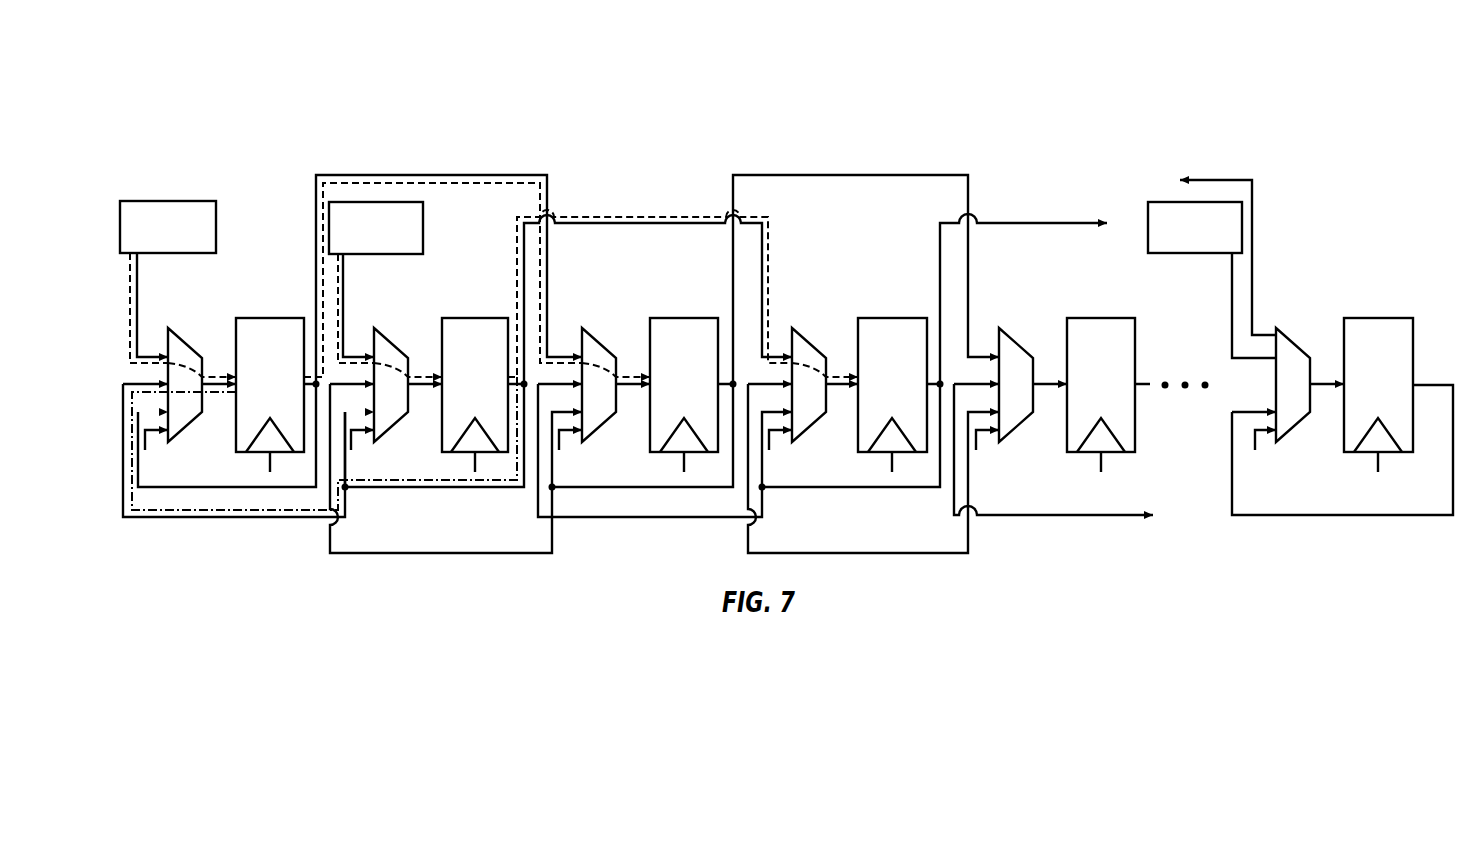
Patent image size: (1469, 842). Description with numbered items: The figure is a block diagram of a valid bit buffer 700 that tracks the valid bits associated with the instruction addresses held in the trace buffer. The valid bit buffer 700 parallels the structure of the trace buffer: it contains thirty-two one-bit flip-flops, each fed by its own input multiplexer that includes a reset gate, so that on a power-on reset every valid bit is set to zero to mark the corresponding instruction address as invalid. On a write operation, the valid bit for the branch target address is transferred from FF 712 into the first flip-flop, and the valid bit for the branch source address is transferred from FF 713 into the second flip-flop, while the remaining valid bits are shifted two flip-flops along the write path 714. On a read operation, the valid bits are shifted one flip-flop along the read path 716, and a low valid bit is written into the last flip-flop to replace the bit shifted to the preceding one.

The valid bit buffer 700 is at (1178, 88).
The FF 712 is at (170, 201).
The FF 713 is at (424, 222).
The write path 714 is at (143, 303).
The read path 716 is at (228, 518).